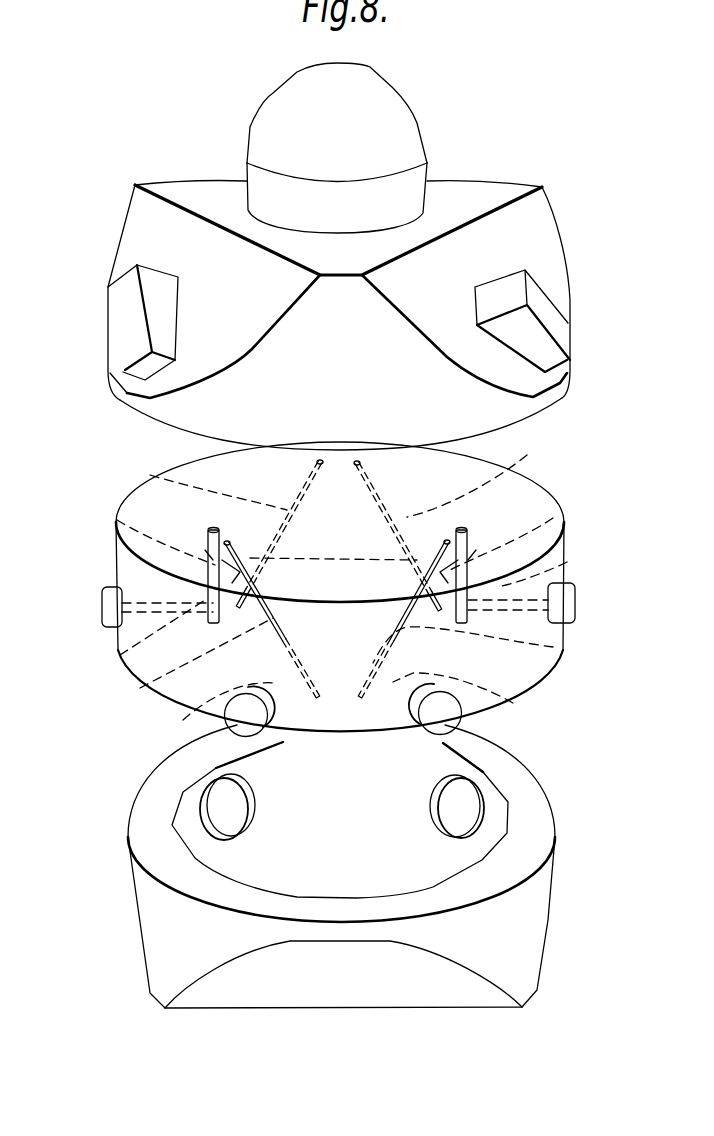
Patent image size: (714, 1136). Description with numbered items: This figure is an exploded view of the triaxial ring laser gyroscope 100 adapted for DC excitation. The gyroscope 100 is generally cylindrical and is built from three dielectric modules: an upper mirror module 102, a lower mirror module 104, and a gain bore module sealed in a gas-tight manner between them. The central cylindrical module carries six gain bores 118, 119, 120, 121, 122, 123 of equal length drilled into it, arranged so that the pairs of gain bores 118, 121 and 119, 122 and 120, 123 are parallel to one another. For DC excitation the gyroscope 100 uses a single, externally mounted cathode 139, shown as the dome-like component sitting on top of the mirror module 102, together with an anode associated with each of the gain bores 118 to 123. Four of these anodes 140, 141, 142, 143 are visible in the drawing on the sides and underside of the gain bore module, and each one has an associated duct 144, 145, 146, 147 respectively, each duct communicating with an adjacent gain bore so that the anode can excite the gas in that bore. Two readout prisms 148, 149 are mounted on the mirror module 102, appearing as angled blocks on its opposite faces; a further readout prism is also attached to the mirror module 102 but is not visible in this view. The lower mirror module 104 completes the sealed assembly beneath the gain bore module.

The triaxial ring laser gyroscope 100 is at (95, 192).
The mirror module 102 is at (576, 263).
The mirror module 104 is at (128, 943).
The gain bore 118 is at (117, 520).
The gain bore 119 is at (150, 475).
The gain bore 120 is at (527, 455).
The gain bore 121 is at (553, 518).
The gain bore 122 is at (553, 647).
The gain bore 123 is at (140, 688).
The cathode 139 is at (355, 132).
The anode 140 is at (112, 587).
The anode 141 is at (570, 605).
The anode 142 is at (445, 715).
The anode 143 is at (230, 720).
The duct 144 is at (120, 648).
The duct 145 is at (567, 562).
The duct 146 is at (513, 703).
The duct 147 is at (183, 720).
The readout prism 148 is at (123, 302).
The readout prism 149 is at (525, 330).